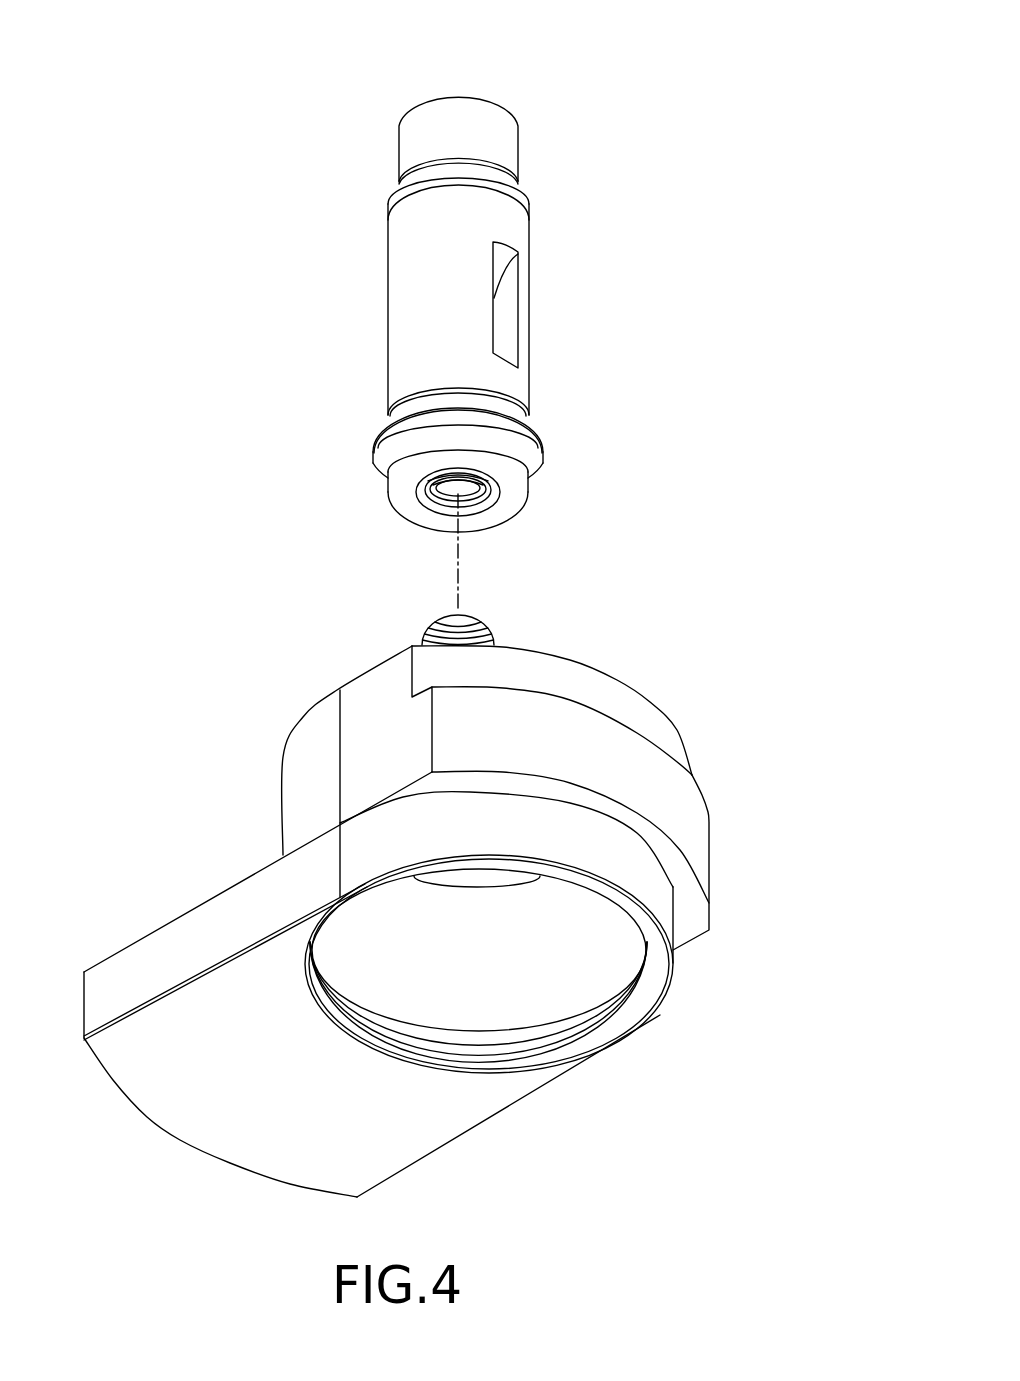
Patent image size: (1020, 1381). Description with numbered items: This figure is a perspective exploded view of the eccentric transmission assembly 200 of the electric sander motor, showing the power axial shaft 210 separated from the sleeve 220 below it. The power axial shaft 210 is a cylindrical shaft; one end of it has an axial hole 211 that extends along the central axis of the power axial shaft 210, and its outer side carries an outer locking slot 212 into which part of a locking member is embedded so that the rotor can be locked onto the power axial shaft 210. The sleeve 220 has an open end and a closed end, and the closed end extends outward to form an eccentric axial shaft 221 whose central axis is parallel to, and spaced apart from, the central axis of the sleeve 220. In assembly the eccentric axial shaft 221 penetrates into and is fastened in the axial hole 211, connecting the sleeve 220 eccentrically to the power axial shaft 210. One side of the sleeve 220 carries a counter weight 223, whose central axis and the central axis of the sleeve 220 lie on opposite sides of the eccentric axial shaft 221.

The eccentric transmission assembly 200 is at (416, 31).
The power axial shaft 210 is at (537, 315).
The axial hole 211 is at (447, 490).
The outer locking slot 212 is at (508, 293).
The sleeve 220 is at (730, 812).
The eccentric axial shaft 221 is at (483, 630).
The counter weight 223 is at (187, 1120).